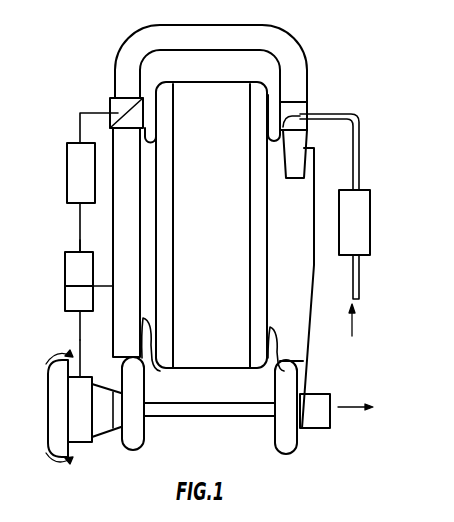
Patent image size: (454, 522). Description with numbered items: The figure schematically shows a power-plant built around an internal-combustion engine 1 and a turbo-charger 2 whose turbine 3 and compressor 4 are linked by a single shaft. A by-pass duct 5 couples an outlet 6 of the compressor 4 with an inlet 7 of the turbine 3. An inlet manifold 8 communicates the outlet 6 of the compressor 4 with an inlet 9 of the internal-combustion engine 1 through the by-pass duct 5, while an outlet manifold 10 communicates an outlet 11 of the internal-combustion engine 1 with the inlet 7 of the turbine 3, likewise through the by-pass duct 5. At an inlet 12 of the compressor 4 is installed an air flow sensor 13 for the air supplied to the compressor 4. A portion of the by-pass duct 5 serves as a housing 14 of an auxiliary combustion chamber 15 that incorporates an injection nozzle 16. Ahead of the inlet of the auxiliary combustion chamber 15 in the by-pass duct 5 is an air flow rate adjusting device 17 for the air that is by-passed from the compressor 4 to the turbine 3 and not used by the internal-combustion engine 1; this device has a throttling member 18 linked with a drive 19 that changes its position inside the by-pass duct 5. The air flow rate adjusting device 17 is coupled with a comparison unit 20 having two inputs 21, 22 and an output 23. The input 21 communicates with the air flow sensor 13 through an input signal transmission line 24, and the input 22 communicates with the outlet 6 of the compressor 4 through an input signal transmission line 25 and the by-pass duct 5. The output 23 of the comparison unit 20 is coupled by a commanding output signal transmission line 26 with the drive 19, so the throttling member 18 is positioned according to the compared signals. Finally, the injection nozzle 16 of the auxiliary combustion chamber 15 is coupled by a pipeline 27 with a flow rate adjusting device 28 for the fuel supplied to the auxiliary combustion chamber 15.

The internal-combustion engine 1 is at (222, 356).
The turbo-charger 2 is at (324, 432).
The turbine 3 is at (287, 455).
The compressor 4 is at (144, 452).
The by-pass duct 5 is at (113, 75).
The outlet of the compressor 6 is at (111, 364).
The inlet of the turbine 7 is at (299, 369).
The inlet manifold 8 is at (149, 364).
The inlet of the internal-combustion engine 9 is at (162, 362).
The outlet manifold 10 is at (296, 283).
The outlet of the internal-combustion engine 11 is at (256, 357).
The inlet of the compressor 12 is at (108, 446).
The air flow sensor 13 is at (88, 448).
The housing 14 is at (310, 101).
The auxiliary combustion chamber 15 is at (314, 103).
The injection nozzle 16 is at (300, 122).
The air flow rate adjusting device 17 is at (96, 125).
The throttling member 18 is at (125, 103).
The drive 19 is at (66, 168).
The comparison unit 20 is at (64, 262).
The input 21 is at (80, 312).
The input 22 is at (78, 286).
The output 23 is at (80, 250).
The input signal transmission line 24 is at (80, 333).
The input signal transmission line 25 is at (106, 292).
The commanding output signal transmission line 26 is at (80, 213).
The pipeline 27 is at (359, 160).
The flow rate adjusting device 28 is at (361, 221).